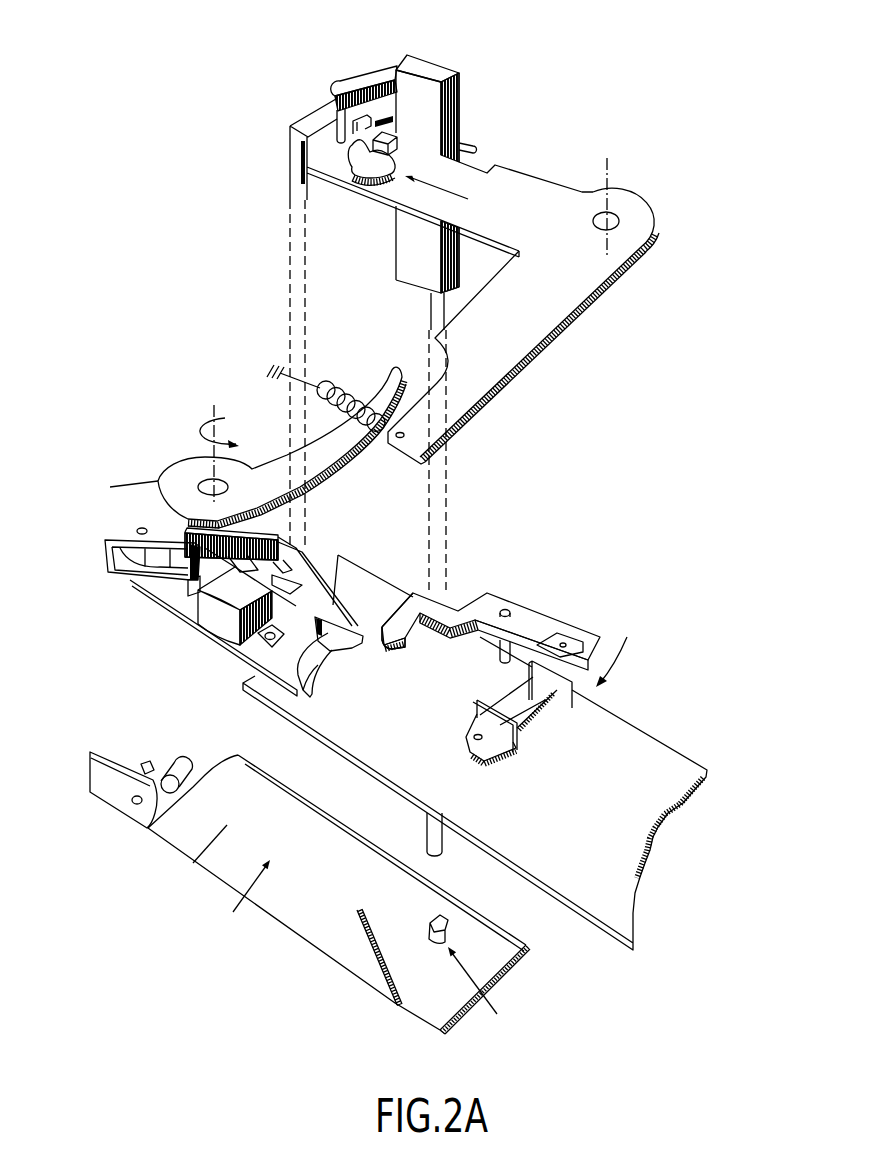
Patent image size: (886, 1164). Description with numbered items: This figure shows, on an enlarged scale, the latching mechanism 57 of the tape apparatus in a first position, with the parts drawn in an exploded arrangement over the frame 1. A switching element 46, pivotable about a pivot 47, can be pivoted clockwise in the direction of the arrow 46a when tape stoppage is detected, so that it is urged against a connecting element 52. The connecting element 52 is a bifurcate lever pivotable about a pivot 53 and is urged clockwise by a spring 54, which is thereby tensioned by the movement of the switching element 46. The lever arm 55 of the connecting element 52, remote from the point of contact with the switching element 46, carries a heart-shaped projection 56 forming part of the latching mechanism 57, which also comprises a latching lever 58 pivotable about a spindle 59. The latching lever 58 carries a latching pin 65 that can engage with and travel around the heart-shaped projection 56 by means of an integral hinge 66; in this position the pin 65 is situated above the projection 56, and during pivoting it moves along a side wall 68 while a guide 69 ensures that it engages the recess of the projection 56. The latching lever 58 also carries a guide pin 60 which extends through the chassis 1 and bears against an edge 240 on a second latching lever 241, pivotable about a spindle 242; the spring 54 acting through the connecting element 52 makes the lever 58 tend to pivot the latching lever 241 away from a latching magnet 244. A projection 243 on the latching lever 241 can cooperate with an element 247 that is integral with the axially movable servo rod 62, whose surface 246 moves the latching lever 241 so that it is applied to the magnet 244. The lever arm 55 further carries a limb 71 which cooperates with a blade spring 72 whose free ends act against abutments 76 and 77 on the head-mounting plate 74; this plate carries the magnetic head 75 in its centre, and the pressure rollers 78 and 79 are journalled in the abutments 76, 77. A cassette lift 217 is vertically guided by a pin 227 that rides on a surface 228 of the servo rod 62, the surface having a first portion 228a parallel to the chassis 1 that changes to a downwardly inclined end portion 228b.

The frame 1 is at (638, 750).
The switching element 46 is at (317, 467).
The arrow indicating clockwise pivoting of switching element 46a is at (239, 432).
The pivot 47 is at (208, 411).
The connecting element 52 is at (463, 387).
The pivot 53 is at (605, 170).
The spring 54 is at (356, 397).
The lever arm 55 is at (310, 122).
The heart-shaped projection 56 is at (353, 161).
The latching mechanism 57 is at (450, 196).
The latching lever 58 is at (450, 92).
The spindle 59 is at (466, 144).
The guide pin 60 is at (430, 833).
The servo rod 62 is at (423, 990).
The latching pin 65 is at (335, 105).
The integral hinge 66 is at (394, 63).
The side wall 68 is at (370, 178).
The guide 69 is at (393, 141).
The limb 71 is at (298, 152).
The blade spring 72 is at (293, 545).
The head-mounting plate 74 is at (270, 657).
The magnetic head 75 is at (227, 598).
The abutment 76 is at (352, 632).
The abutment 77 is at (170, 525).
The pressure roller 78 is at (315, 660).
The pressure roller 79 is at (124, 560).
The cassette lift 217 is at (117, 798).
The pin 227 is at (175, 795).
The surface 228 is at (337, 892).
The first portion of surface 228a is at (195, 863).
The downwardly inclined end portion 228b is at (363, 933).
The edge 240 is at (442, 592).
The latching lever 241 is at (540, 623).
The spindle 242 is at (506, 608).
The projection 243 is at (403, 643).
The latching magnet 244 is at (540, 727).
The surface 246 is at (432, 917).
The element 247 is at (490, 993).